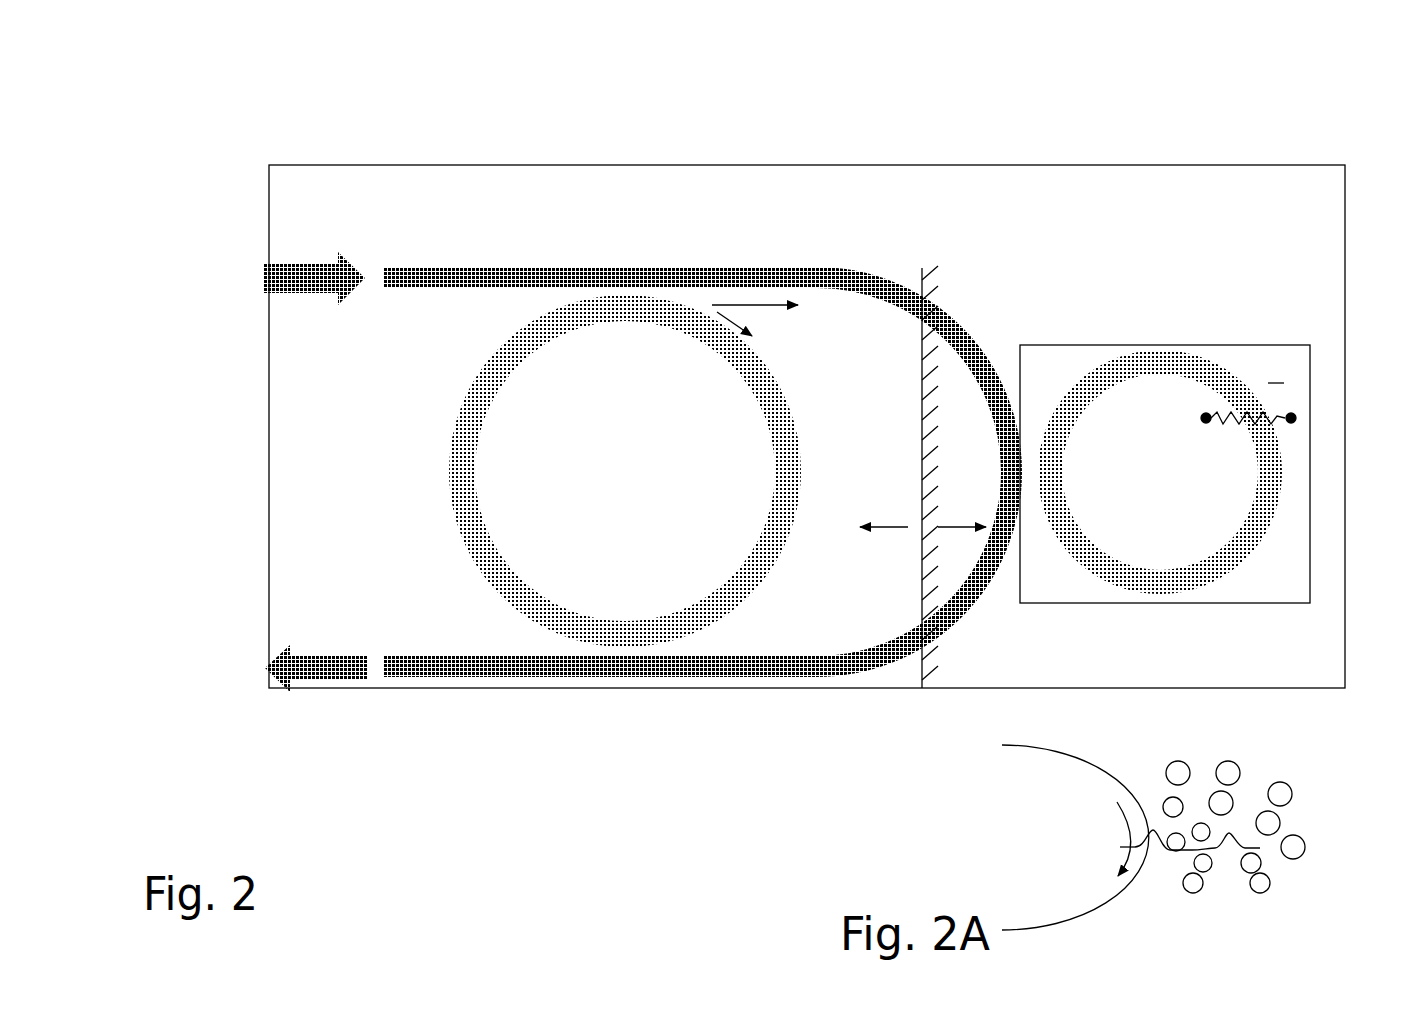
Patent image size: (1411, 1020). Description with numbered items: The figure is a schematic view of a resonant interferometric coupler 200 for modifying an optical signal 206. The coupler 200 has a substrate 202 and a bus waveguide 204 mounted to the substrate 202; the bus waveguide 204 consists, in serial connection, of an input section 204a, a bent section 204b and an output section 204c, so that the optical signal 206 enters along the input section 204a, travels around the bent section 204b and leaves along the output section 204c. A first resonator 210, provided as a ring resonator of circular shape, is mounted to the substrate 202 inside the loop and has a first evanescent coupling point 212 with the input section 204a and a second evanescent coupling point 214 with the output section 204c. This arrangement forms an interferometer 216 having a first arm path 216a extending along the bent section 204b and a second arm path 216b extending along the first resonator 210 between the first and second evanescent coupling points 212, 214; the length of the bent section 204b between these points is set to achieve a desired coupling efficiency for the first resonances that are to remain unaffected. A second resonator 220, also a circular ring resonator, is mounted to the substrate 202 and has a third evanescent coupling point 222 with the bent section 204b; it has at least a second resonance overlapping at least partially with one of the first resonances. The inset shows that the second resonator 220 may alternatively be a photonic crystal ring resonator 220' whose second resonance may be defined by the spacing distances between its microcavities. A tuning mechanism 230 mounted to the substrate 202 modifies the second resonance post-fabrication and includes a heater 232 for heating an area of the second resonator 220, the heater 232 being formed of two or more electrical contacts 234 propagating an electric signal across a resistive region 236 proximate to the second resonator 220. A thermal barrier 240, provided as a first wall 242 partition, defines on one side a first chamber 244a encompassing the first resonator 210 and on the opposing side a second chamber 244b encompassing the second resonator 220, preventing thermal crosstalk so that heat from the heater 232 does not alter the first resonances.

In FIG. 2, the resonant interferometric coupler 200 is at (1110, 150).
In FIG. 2, the substrate 202 is at (268, 485).
In FIG. 2, the bus waveguide 204 is at (430, 271).
In FIG. 2, the input section 204a is at (450, 289).
In FIG. 2, the bent section 204b is at (905, 312).
In FIG. 2, the output section 204c is at (455, 656).
In FIG. 2, the optical signal 206 is at (251, 290).
In FIG. 2, the first resonator 210 is at (588, 461).
In FIG. 2, the first evanescent coupling point 212 is at (634, 267).
In FIG. 2, the second evanescent coupling point 214 is at (627, 680).
In FIG. 2, the interferometer 216 is at (964, 293).
In FIG. 2, the first arm path 216a is at (758, 302).
In FIG. 2, the second arm path 216b is at (715, 313).
In FIG. 2, the second resonator 220 is at (1160, 472).
In FIG. 2A, the photonic crystal ring resonator 220' is at (1248, 803).
In FIG. 2, the third evanescent coupling point 222 is at (1037, 470).
In FIG. 2, the tuning mechanism 230 is at (1213, 340).
In FIG. 2, the heater 232 is at (1303, 408).
In FIG. 2, the electrical contacts 234 is at (1208, 421).
In FIG. 2, the resistive region 236 is at (1272, 415).
In FIG. 2, the thermal barrier 240 is at (950, 656).
In FIG. 2, the first wall 242 is at (940, 597).
In FIG. 2, the first chamber 244a is at (875, 509).
In FIG. 2, the second chamber 244b is at (973, 509).